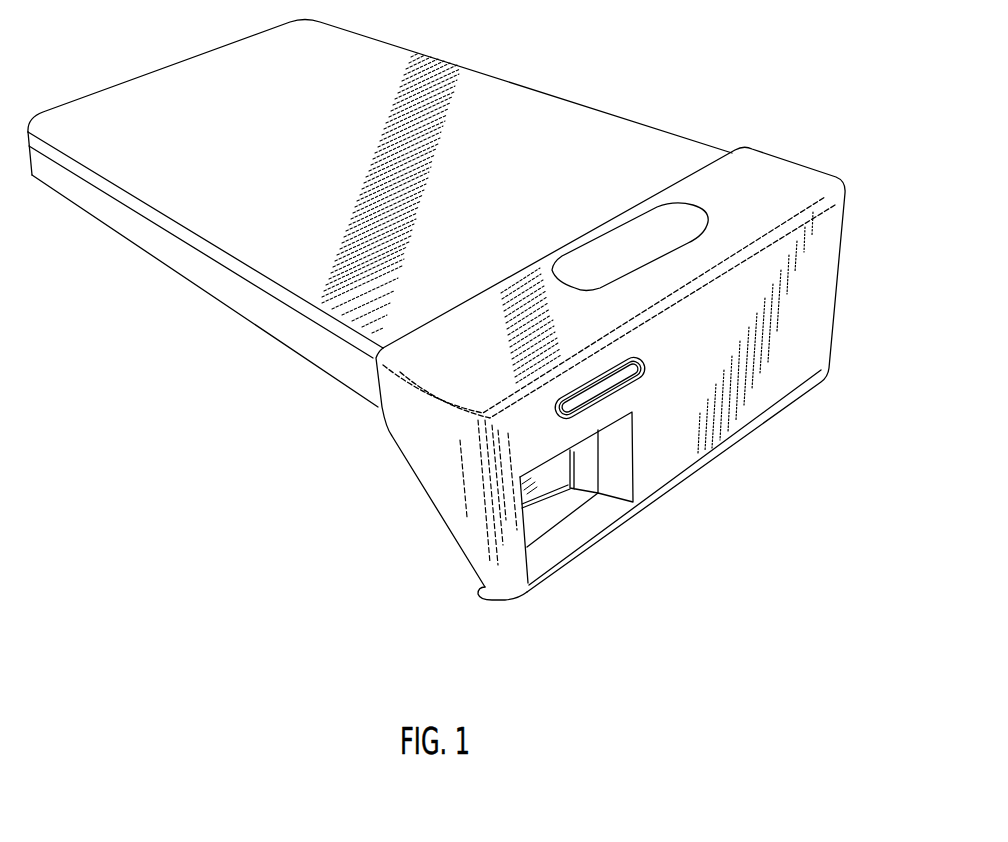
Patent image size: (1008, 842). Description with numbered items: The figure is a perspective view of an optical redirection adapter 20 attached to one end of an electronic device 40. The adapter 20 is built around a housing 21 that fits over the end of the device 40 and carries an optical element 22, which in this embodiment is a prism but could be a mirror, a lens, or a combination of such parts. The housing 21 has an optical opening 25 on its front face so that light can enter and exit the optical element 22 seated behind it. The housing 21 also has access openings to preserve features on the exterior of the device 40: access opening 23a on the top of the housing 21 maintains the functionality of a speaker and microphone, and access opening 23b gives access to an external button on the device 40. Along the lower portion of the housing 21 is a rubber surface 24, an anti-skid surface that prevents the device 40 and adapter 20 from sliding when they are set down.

The optical redirection adapter 20 is at (364, 548).
The housing 21 is at (810, 182).
The optical element 22 is at (545, 473).
The access opening 23a is at (666, 231).
The access opening 23b is at (645, 380).
The rubber surface 24 is at (528, 598).
The optical opening 25 is at (612, 507).
The electronic device 40 is at (177, 254).